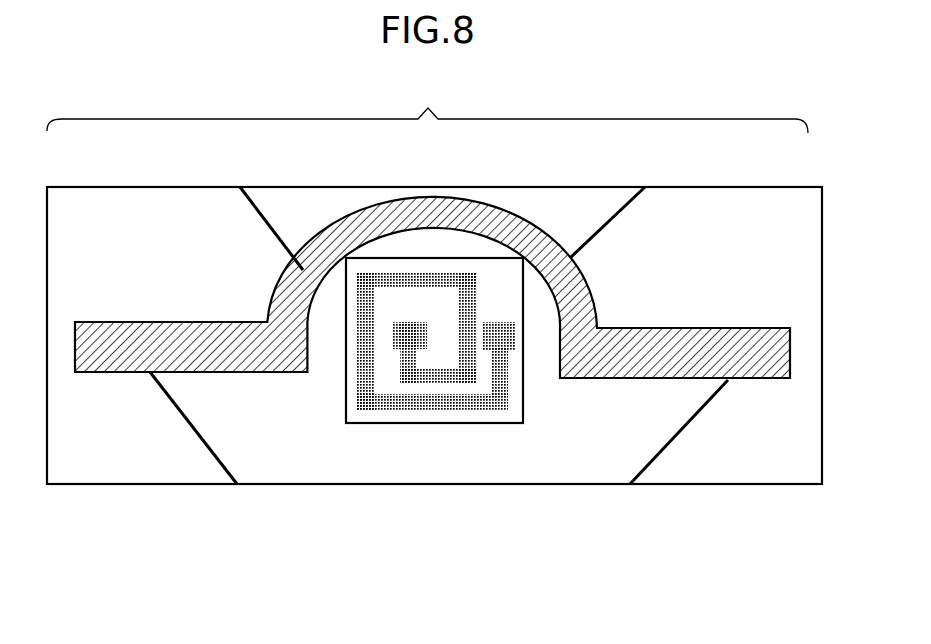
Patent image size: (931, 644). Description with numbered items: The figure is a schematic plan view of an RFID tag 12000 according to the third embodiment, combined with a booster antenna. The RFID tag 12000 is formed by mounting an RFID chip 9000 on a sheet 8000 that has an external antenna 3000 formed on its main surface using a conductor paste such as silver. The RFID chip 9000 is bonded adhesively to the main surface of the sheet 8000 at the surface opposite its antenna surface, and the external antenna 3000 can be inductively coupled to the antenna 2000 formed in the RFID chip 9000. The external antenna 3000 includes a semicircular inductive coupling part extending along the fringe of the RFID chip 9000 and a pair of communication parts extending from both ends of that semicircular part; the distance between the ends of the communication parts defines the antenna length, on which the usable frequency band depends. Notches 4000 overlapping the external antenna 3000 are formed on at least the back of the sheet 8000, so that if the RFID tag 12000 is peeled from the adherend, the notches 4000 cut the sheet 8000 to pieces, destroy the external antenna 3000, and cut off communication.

The RFID tag 12000 is at (427, 108).
The sheet 8000 is at (530, 484).
The notches 4000 is at (592, 220).
The external antenna 3000 is at (580, 333).
The RFID chip 9000 is at (346, 420).
The antenna 2000 is at (433, 412).